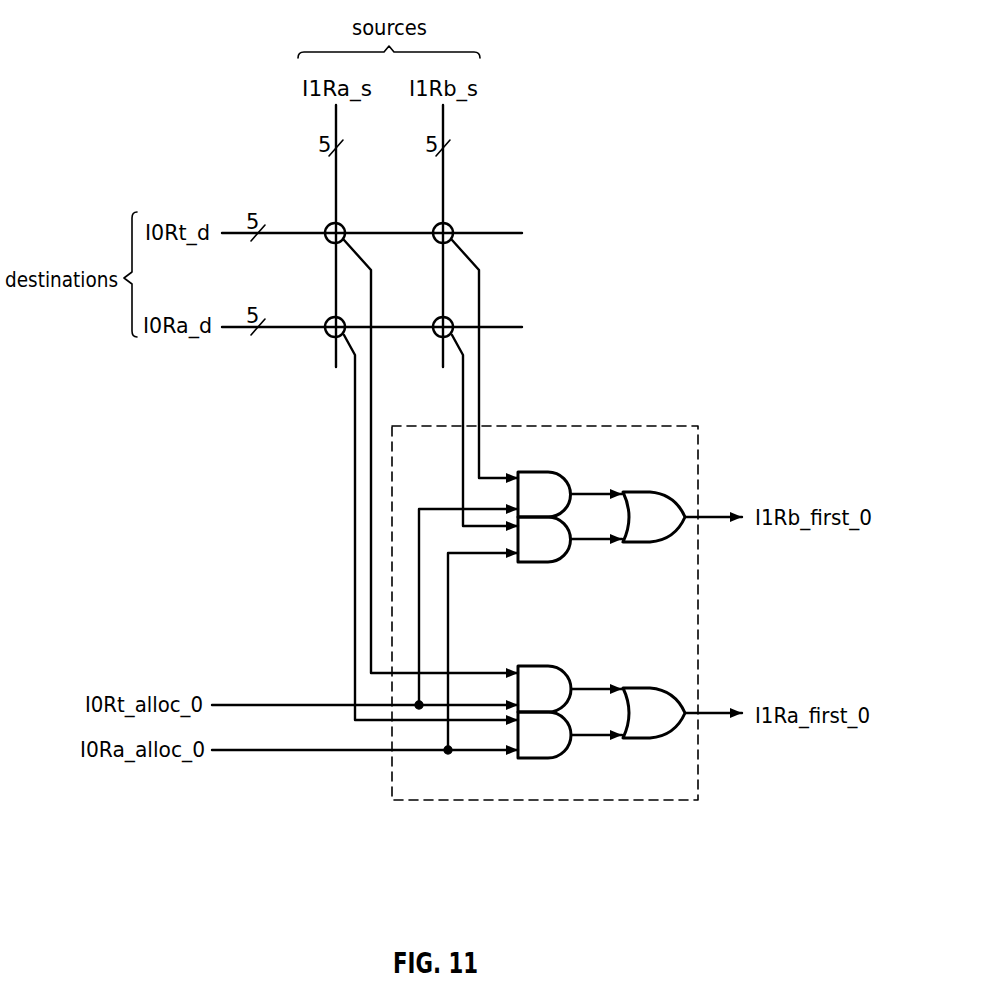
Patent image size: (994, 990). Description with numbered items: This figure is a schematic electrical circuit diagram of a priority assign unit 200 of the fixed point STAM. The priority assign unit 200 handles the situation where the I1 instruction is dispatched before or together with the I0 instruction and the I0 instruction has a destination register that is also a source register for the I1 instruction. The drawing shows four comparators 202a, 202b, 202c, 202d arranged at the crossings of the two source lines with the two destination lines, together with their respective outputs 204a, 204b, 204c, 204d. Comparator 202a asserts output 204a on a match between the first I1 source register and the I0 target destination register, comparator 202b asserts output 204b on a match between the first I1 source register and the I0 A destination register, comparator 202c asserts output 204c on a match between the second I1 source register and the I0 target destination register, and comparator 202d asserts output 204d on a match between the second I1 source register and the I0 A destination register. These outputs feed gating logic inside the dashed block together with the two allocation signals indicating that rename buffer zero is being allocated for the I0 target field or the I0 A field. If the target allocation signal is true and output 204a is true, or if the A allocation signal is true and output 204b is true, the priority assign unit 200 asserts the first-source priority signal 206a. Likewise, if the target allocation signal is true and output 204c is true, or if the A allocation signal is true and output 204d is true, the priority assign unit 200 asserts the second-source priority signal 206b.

The priority assign unit 200 is at (633, 426).
The comparator 202a is at (346, 226).
The comparator 202b is at (329, 321).
The comparator 202c is at (453, 226).
The comparator 202d is at (437, 321).
The output 204a is at (374, 370).
The output 204b is at (353, 478).
The output 204c is at (481, 410).
The output 204d is at (461, 497).
The I1Ra_first_0 206a is at (716, 715).
The I1Rb_first_0 206b is at (717, 519).